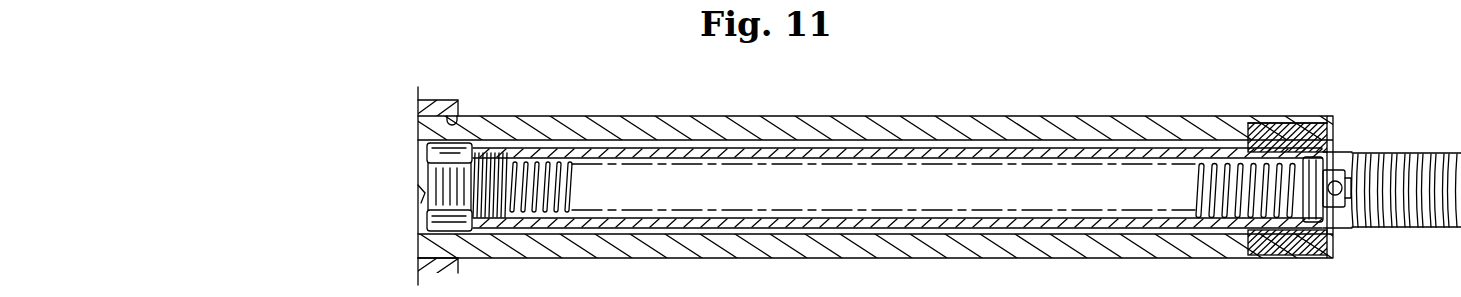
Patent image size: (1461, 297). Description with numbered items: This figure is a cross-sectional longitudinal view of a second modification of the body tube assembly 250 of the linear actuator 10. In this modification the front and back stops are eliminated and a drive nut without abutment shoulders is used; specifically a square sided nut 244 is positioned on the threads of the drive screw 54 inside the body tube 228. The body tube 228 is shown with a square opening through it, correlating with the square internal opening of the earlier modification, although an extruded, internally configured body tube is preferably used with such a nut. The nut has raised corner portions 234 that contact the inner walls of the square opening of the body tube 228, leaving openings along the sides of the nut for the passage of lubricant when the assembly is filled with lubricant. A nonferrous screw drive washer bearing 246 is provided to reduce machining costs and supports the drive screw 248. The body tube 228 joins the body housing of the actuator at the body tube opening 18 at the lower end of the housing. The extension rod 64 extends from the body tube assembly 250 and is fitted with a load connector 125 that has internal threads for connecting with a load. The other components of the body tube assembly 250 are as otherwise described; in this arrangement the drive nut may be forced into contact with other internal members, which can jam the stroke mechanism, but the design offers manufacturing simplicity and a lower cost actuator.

The linear actuator 10 is at (948, 88).
The body tube opening 18 is at (452, 126).
The drive screw 54 is at (760, 210).
The extension rod 64 is at (1347, 233).
The load connector 125 is at (1447, 224).
The body tube 228 is at (828, 115).
The raised corner portions 234 is at (444, 152).
The square sided nut 244 is at (427, 168).
The screw drive washer bearing 246 is at (1331, 157).
The drive screw 248 is at (1207, 168).
The body tube assembly 250 is at (1070, 92).